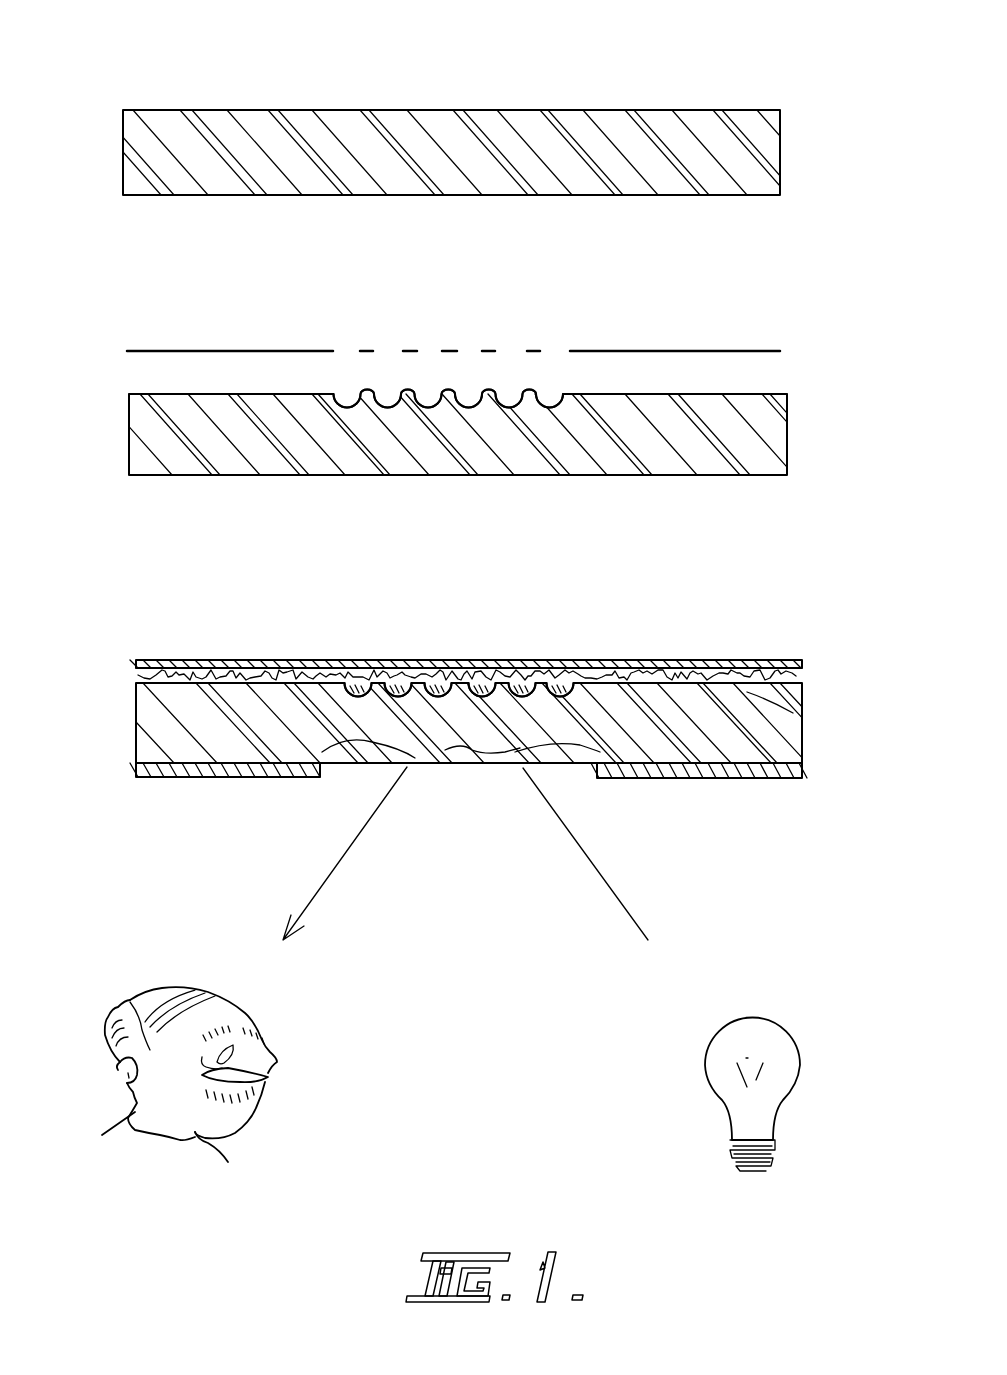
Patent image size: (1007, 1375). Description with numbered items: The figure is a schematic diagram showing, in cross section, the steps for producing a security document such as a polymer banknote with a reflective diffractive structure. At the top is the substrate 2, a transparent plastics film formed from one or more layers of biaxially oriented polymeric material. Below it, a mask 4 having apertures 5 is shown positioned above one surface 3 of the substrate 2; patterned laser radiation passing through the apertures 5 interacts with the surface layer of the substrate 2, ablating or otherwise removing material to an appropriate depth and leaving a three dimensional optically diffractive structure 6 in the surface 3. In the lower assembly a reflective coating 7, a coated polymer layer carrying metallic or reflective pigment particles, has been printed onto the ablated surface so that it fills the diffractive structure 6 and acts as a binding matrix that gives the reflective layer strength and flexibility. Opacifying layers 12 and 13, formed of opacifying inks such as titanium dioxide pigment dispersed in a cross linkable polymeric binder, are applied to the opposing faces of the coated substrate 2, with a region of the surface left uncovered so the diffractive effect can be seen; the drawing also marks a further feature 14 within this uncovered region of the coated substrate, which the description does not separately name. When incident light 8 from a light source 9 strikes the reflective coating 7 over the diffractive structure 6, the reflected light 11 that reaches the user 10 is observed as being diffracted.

The substrate 2 is at (720, 123).
The surface 3 is at (770, 395).
The mask 4 is at (139, 340).
The apertures 5 is at (420, 350).
The optically diffractive structure 6 is at (322, 405).
The reflective coating 7 is at (135, 678).
The incident light 8 is at (593, 857).
The light source 9 is at (714, 1042).
The user 10 is at (270, 1067).
The reflected light 11 is at (373, 813).
The opacifying layer 12 is at (263, 660).
The opacifying layer 13 is at (270, 777).
The lens element 14 is at (461, 733).